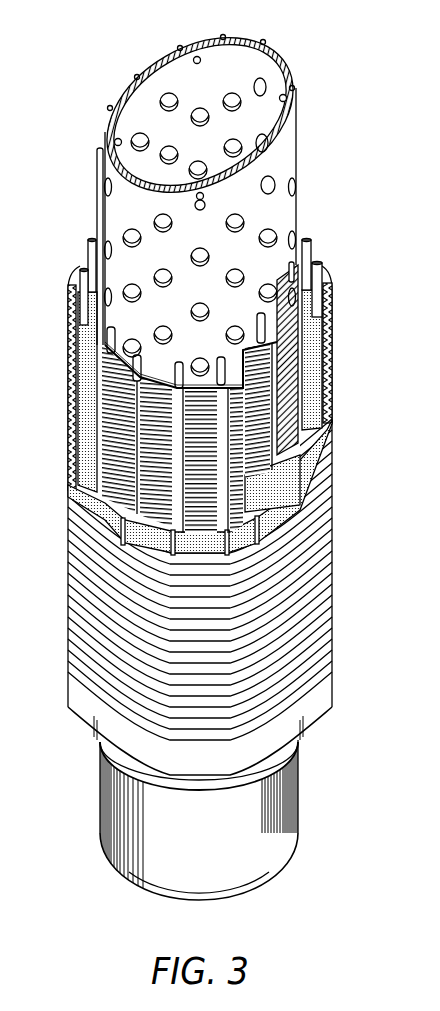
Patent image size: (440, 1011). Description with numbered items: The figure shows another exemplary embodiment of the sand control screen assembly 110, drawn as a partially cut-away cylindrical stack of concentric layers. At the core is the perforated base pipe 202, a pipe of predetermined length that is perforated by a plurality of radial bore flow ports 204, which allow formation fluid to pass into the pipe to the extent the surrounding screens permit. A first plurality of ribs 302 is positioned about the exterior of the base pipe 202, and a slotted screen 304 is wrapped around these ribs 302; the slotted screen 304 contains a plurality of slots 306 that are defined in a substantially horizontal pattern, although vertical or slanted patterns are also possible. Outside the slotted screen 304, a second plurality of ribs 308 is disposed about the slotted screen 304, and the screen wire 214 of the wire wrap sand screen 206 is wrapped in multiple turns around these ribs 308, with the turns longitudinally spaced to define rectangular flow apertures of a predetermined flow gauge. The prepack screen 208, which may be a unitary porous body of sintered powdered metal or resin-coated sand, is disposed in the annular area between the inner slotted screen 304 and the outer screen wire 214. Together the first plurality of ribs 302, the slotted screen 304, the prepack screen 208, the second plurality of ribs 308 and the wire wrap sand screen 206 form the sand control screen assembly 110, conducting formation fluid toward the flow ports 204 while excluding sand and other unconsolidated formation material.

The sand control screen assembly 110 is at (88, 87).
The perforated base pipe 202 is at (283, 58).
The flow ports 204 is at (167, 95).
The wire wrap sand screen 206 is at (338, 669).
The prepack screen 208 is at (312, 357).
The screen wire 214 is at (333, 540).
The first plurality of ribs 302 is at (96, 174).
The slotted screen 304 is at (265, 403).
The slots 306 is at (84, 400).
The second plurality of ribs 308 is at (325, 274).